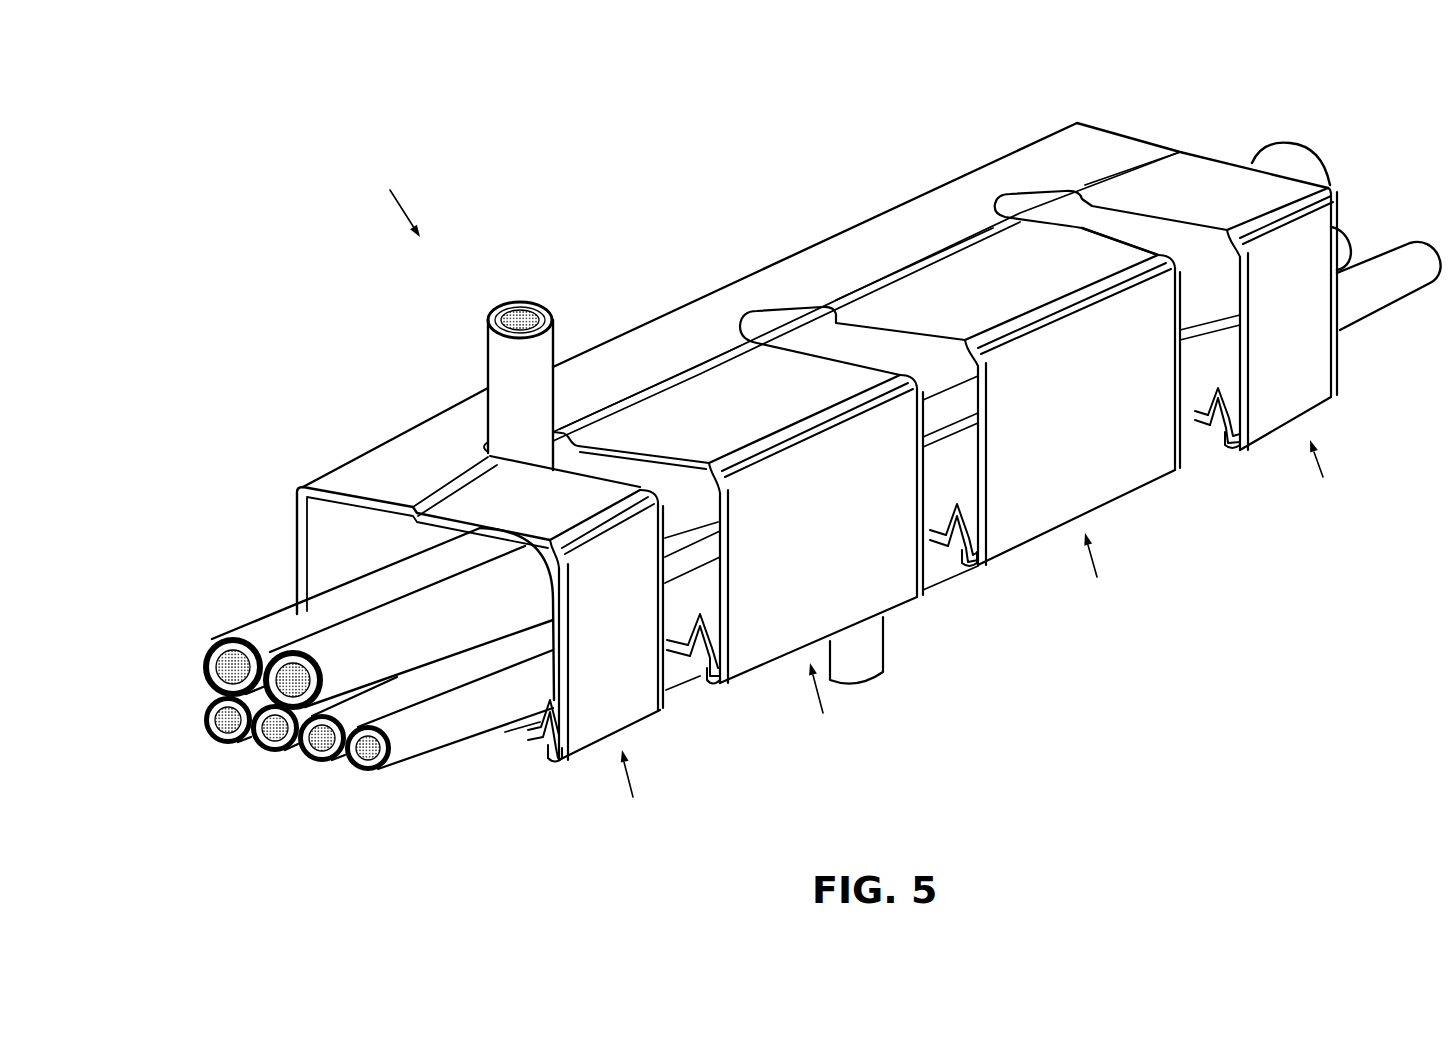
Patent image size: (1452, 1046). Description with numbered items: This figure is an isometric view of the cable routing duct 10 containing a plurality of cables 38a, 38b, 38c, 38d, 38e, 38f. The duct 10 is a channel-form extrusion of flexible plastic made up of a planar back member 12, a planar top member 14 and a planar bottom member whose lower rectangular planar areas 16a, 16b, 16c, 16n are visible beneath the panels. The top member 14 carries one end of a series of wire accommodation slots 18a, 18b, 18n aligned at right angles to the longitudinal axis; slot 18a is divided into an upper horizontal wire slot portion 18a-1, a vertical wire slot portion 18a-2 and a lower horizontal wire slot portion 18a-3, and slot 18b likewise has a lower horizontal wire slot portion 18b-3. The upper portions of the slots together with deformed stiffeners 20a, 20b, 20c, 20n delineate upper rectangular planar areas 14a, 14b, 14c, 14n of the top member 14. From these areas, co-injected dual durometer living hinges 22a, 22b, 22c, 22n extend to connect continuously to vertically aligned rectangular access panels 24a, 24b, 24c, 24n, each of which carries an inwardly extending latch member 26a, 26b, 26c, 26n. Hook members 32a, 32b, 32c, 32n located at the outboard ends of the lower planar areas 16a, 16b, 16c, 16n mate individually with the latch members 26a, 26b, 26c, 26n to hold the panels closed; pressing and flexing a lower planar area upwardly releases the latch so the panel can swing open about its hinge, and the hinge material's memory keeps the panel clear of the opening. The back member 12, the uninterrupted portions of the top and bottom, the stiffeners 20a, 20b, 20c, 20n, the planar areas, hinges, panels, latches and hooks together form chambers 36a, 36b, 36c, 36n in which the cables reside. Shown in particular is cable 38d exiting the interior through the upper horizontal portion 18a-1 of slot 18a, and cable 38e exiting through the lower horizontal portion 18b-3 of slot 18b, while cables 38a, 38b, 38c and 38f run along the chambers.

The cable routing duct 10 is at (388, 198).
The planar back member 12 is at (318, 503).
The planar top member 14 is at (340, 482).
The upper rectangular planar area 14a is at (579, 515).
The upper rectangular planar area 14b is at (804, 419).
The upper rectangular planar area 14c is at (1061, 284).
The upper rectangular planar area 14n is at (1253, 204).
The lower rectangular planar area 16a is at (505, 730).
The lower rectangular planar area 16b is at (680, 648).
The lower rectangular planar area 16c is at (950, 522).
The lower rectangular planar area 16n is at (1203, 403).
The wire accommodation slot 18a is at (487, 445).
The upper horizontal wire slot portion 18a-1 is at (575, 468).
The vertical wire slot portion 18a-2 is at (700, 513).
The lower horizontal wire slot portion 18a-3 is at (675, 697).
The wire accommodation slot 18b is at (780, 305).
The lower horizontal wire slot portion 18b-3 is at (935, 570).
The wire accommodation slot 18n is at (1013, 200).
The deformed stiffener 20a is at (393, 470).
The deformed stiffener 20b is at (667, 377).
The deformed stiffener 20c is at (877, 283).
The deformed stiffener 20n is at (1103, 180).
The living hinge 22a is at (583, 540).
The living hinge 22b is at (760, 457).
The living hinge 22c is at (1013, 337).
The living hinge 22n is at (1247, 240).
The access panel 24a is at (611, 631).
The access panel 24b is at (821, 535).
The access panel 24c is at (1079, 416).
The access panel 24n is at (1288, 319).
The latch member 26a is at (555, 757).
The latch member 26b is at (713, 680).
The latch member 26c is at (970, 560).
The latch member 26n is at (1230, 443).
The hook member 32a is at (540, 710).
The hook member 32b is at (697, 663).
The hook member 32c is at (952, 540).
The hook member 32n is at (1218, 432).
The chamber 36a is at (609, 766).
The chamber 36b is at (818, 666).
The chamber 36c is at (1076, 538).
The chamber 36n is at (1292, 450).
The cable 38a is at (250, 632).
The cable 38b is at (218, 740).
The cable 38c is at (275, 748).
The cable 38d is at (507, 358).
The cable 38e is at (325, 763).
The cable 38f is at (362, 770).